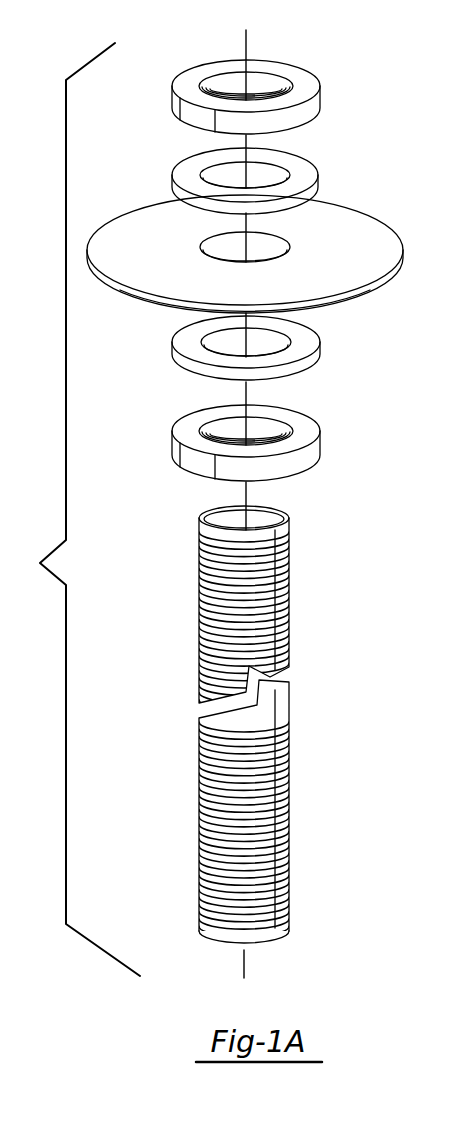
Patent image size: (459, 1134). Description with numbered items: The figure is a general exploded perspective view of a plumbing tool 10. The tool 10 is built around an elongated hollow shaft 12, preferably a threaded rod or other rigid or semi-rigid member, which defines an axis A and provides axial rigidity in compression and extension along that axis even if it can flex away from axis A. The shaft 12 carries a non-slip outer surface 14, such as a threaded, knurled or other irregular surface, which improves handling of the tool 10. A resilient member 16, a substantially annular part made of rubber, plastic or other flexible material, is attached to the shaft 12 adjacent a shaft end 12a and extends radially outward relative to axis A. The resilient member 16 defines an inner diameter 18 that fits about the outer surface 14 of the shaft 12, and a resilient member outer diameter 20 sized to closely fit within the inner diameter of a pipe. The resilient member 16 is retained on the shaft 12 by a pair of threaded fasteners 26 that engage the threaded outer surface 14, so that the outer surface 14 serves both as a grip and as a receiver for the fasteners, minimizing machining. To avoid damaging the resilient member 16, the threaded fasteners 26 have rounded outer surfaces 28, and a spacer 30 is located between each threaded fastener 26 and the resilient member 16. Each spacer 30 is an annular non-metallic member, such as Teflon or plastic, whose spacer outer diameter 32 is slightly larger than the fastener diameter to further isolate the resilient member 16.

The axis A is at (246, 43).
The plumbing tool 10 is at (75, 509).
The elongated hollow shaft 12 is at (274, 711).
The shaft end 12a is at (287, 517).
The non-slip outer surface 14 is at (273, 747).
The resilient member 16 is at (254, 246).
The inner diameter 18 is at (285, 243).
The resilient member outer diameter 20 is at (367, 285).
The threaded fasteners 26 is at (265, 253).
The rounded outer surfaces 28 is at (213, 60).
The spacer 30 is at (252, 252).
The spacer outer diameter 32 is at (177, 163).